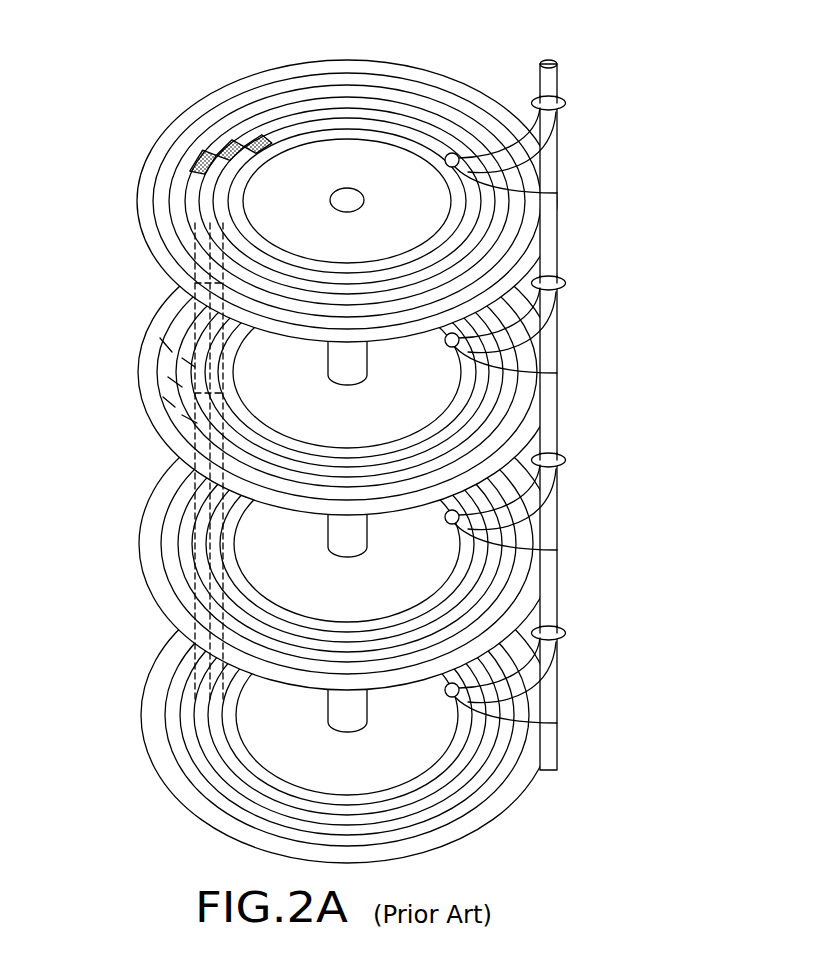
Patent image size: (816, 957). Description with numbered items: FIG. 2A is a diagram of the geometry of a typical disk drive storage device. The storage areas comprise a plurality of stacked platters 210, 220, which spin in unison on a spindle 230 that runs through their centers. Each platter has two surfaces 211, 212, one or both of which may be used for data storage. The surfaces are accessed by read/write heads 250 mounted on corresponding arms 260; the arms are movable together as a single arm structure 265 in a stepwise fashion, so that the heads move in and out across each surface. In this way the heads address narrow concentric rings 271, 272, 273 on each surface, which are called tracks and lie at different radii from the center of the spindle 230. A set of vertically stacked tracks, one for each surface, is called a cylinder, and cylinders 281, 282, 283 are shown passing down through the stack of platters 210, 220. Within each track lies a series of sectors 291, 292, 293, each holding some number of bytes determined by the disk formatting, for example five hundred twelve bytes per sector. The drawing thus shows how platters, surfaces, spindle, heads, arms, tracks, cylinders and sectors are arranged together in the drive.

The platter 210 is at (306, 180).
The platter surface 211 is at (145, 557).
The platter surface 212 is at (150, 525).
The platter 220 is at (165, 300).
The spindle 230 is at (368, 355).
The read/write head 250 is at (495, 193).
The arm 260 is at (558, 130).
The arm structure 265 is at (572, 118).
The track 271 is at (323, 130).
The track 272 is at (367, 118).
The track 273 is at (417, 115).
The cylinder 281 is at (165, 347).
The cylinder 282 is at (160, 380).
The cylinder 283 is at (158, 413).
The sector 291 is at (200, 162).
The sector 292 is at (222, 142).
The sector 293 is at (245, 137).